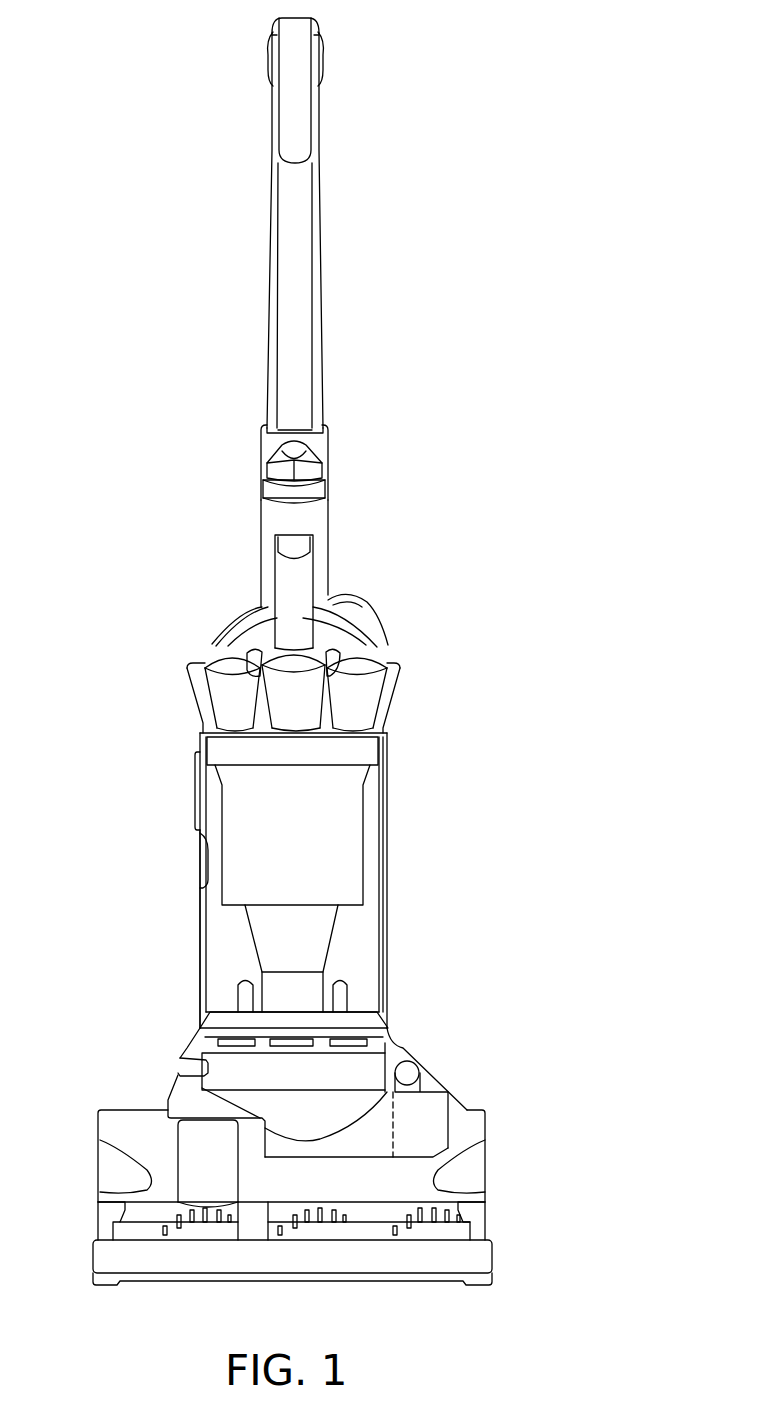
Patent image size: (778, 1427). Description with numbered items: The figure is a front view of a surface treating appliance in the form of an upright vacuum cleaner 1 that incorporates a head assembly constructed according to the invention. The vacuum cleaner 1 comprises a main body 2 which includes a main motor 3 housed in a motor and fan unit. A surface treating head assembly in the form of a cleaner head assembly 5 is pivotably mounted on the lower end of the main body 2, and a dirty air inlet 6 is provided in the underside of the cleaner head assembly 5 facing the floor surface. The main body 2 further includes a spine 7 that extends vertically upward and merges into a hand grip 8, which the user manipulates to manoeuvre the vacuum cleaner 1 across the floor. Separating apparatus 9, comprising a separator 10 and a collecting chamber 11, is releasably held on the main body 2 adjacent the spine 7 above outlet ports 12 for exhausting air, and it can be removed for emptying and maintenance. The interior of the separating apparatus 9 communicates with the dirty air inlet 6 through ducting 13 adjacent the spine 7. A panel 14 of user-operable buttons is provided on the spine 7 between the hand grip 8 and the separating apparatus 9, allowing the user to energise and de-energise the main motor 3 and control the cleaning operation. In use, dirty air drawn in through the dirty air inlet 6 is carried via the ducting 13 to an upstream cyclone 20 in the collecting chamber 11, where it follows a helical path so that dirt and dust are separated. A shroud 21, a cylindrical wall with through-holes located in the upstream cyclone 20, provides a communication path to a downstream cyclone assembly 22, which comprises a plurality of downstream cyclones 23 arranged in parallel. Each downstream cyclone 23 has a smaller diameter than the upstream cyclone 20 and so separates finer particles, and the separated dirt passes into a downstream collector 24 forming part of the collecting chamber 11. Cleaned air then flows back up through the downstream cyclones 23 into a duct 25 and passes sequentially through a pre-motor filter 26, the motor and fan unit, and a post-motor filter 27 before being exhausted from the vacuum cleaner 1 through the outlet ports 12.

The vacuum cleaner 1 is at (154, 810).
The main body 2 is at (432, 1100).
The main motor 3 is at (369, 1150).
The cleaner head assembly 5 is at (100, 1112).
The dirty air inlet 6 is at (343, 1281).
The spine 7 is at (260, 568).
The hand grip 8 is at (300, 97).
The separating apparatus 9 is at (391, 837).
The separator 10 is at (383, 790).
The collecting chamber 11 is at (382, 927).
The outlet ports 12 is at (207, 1032).
The ducting 13 is at (200, 897).
The panel 14 is at (325, 438).
The upstream cyclone 20 is at (207, 863).
The shroud 21 is at (303, 857).
The downstream cyclone assembly 22 is at (382, 701).
The downstream cyclones 23 is at (210, 657).
The downstream collector 24 is at (278, 958).
The duct 25 is at (382, 878).
The pre-motor filter 26 is at (418, 1122).
The post-motor filter 27 is at (185, 1065).